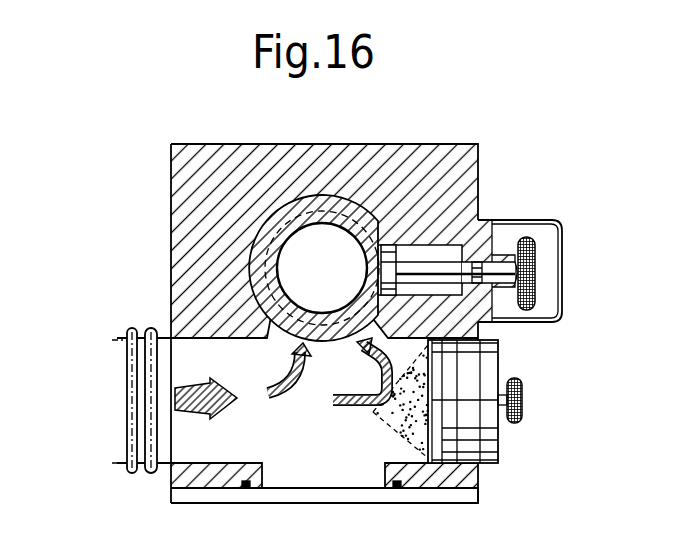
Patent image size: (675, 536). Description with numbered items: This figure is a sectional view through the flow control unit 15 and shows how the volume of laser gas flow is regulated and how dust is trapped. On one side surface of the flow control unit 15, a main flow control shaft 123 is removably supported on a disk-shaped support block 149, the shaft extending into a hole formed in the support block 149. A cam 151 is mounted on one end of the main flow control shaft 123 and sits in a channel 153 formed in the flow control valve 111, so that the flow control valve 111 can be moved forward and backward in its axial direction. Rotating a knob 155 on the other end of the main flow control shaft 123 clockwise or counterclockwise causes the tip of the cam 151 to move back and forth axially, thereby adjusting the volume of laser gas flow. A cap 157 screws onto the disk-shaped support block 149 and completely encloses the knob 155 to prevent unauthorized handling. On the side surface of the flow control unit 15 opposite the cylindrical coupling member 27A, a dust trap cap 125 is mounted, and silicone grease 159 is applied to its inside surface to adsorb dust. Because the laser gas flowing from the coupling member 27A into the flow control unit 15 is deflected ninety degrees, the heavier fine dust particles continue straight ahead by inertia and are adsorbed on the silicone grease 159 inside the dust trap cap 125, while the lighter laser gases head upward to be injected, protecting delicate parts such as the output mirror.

The flow control unit 15 is at (176, 171).
The flow control valve 111 is at (278, 220).
The channel 153 is at (358, 214).
The cam 151 is at (389, 241).
The main flow control shaft 123 is at (427, 266).
The disk-shaped support block 149 is at (486, 221).
The cap 157 is at (529, 221).
The knob 155 is at (536, 269).
The silicone grease 159 is at (428, 427).
The dust trap cap 125 is at (470, 437).
The cylindrical coupling member 27A is at (118, 338).